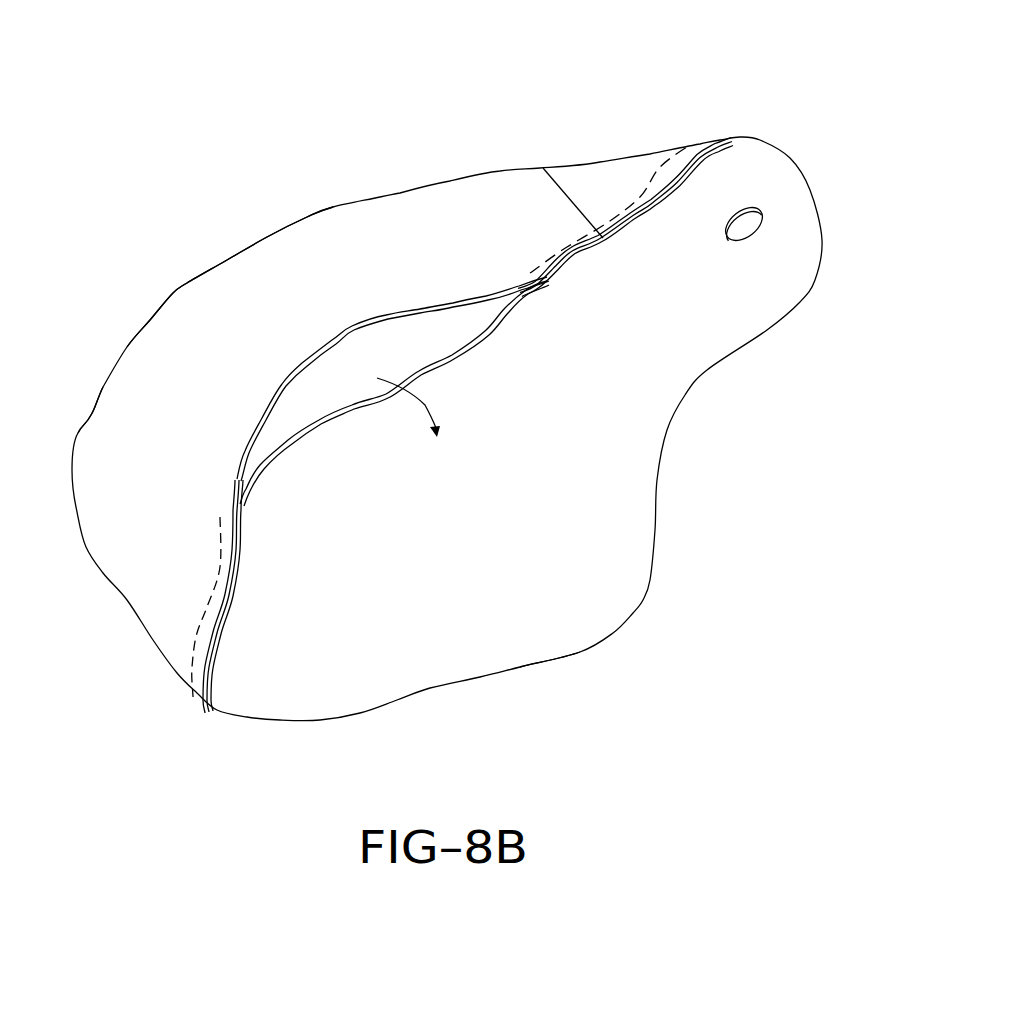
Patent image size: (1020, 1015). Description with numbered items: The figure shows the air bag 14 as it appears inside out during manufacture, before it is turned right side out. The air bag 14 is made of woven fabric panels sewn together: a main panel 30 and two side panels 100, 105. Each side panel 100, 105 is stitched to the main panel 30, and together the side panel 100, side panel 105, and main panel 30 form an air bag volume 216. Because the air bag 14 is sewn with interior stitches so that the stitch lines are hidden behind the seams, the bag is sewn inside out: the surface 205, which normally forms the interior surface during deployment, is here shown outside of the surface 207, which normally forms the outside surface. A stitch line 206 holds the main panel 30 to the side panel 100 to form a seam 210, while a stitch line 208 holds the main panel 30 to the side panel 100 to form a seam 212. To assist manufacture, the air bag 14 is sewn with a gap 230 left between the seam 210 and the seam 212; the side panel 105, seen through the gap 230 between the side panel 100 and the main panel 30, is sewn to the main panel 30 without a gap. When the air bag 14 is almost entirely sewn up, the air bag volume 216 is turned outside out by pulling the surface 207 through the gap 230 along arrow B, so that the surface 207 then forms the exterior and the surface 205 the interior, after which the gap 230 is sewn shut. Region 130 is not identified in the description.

The air bag 14 is at (662, 103).
The main panel 30 is at (269, 260).
The side panel 100 is at (505, 649).
The side panel 105 is at (440, 326).
The flap region 130 is at (588, 194).
The surface 205 is at (171, 399).
The stitch line 206 is at (203, 630).
The surface 207 is at (311, 399).
The stitch line 208 is at (552, 253).
The seam 210 is at (238, 615).
The seam 212 is at (601, 270).
The air bag volume 216 is at (179, 260).
The gap 230 is at (348, 316).
The arrow B is at (425, 405).